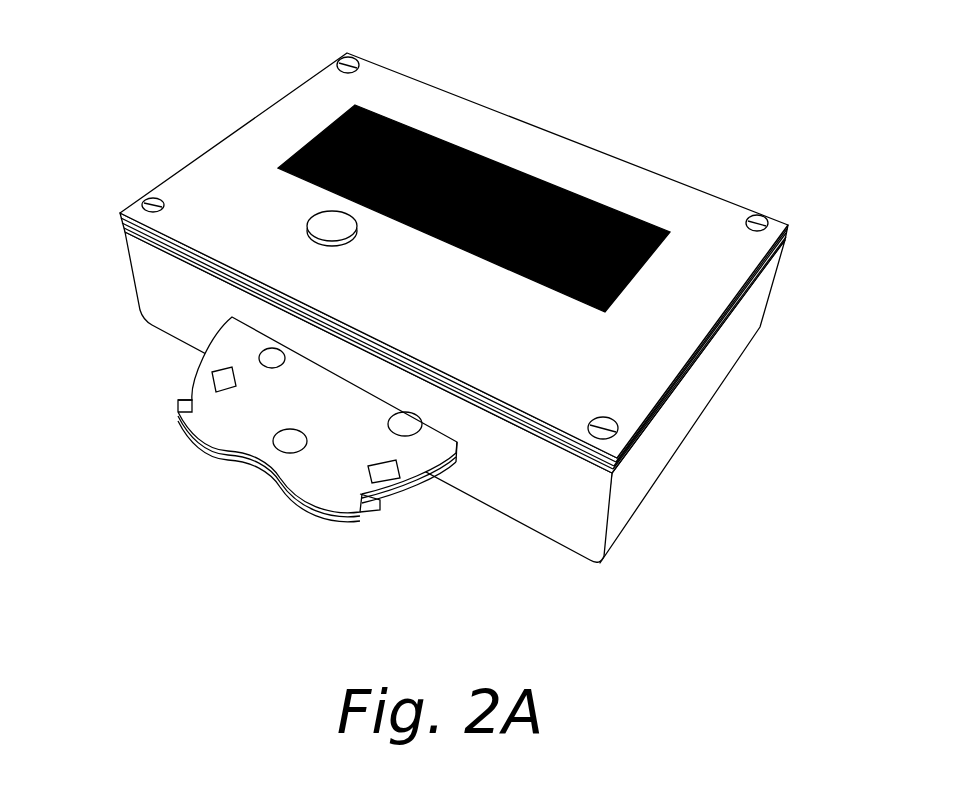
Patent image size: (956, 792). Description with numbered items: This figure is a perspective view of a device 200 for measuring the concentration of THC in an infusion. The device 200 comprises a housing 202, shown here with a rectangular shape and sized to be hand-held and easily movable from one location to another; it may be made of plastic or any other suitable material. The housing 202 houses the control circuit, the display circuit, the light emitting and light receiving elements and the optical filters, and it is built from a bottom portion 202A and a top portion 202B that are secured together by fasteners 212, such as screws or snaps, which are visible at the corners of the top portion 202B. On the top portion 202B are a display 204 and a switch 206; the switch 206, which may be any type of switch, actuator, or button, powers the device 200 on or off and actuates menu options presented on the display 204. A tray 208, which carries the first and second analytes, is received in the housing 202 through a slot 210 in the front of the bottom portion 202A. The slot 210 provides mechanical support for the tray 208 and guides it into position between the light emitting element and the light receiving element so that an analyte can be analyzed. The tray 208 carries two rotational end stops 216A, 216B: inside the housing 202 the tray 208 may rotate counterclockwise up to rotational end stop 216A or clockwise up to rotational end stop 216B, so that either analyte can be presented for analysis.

The device 200 is at (634, 73).
The housing 202 is at (454, 308).
The bottom portion 202A is at (368, 397).
The top portion 202B is at (687, 145).
The display 204 is at (640, 277).
The switch 206 is at (353, 243).
The tray 208 is at (330, 431).
The slot 210 is at (460, 462).
The fasteners 212 is at (356, 72).
The rotational end stop 216A is at (366, 505).
The rotational end stop 216B is at (182, 398).